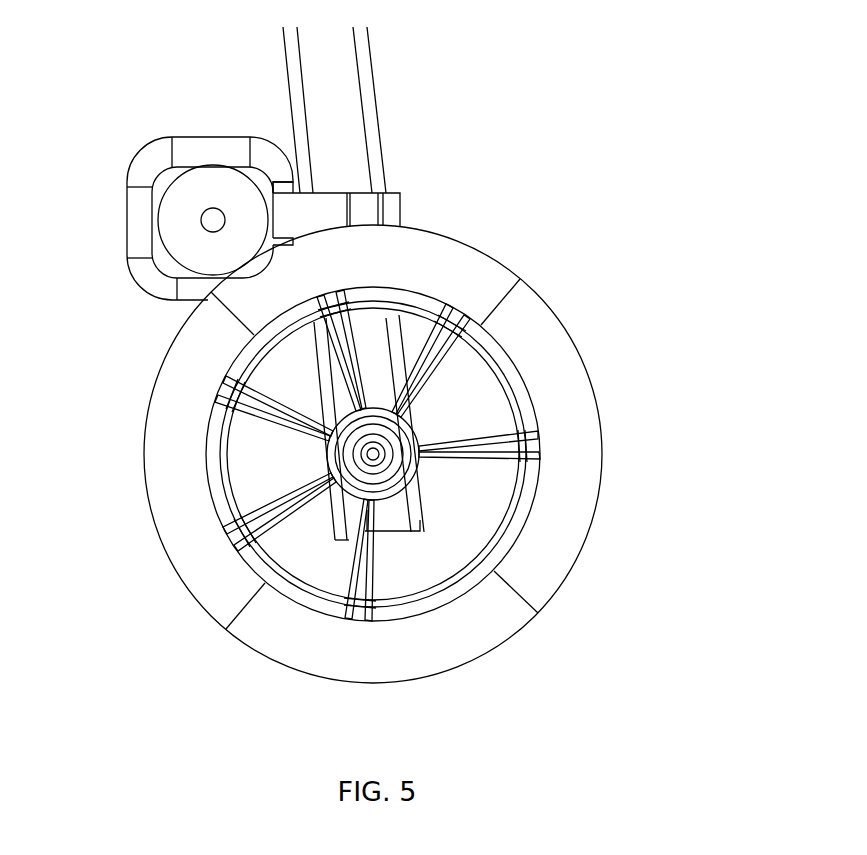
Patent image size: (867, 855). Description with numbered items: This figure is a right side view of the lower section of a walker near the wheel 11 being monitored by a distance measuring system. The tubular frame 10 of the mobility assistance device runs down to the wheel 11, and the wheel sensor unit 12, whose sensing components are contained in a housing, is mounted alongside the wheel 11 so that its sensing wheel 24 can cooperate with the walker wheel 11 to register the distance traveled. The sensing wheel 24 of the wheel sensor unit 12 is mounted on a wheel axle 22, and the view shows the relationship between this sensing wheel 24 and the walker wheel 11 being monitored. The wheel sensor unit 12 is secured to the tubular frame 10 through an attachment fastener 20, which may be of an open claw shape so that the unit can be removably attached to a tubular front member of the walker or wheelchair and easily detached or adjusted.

The tubular frame 10 is at (396, 70).
The wheel 11 is at (632, 433).
The wheel sensor unit 12 is at (210, 126).
The attachment fastener 20 is at (422, 207).
The wheel axle 22 is at (197, 241).
The sensing wheel 24 is at (148, 220).